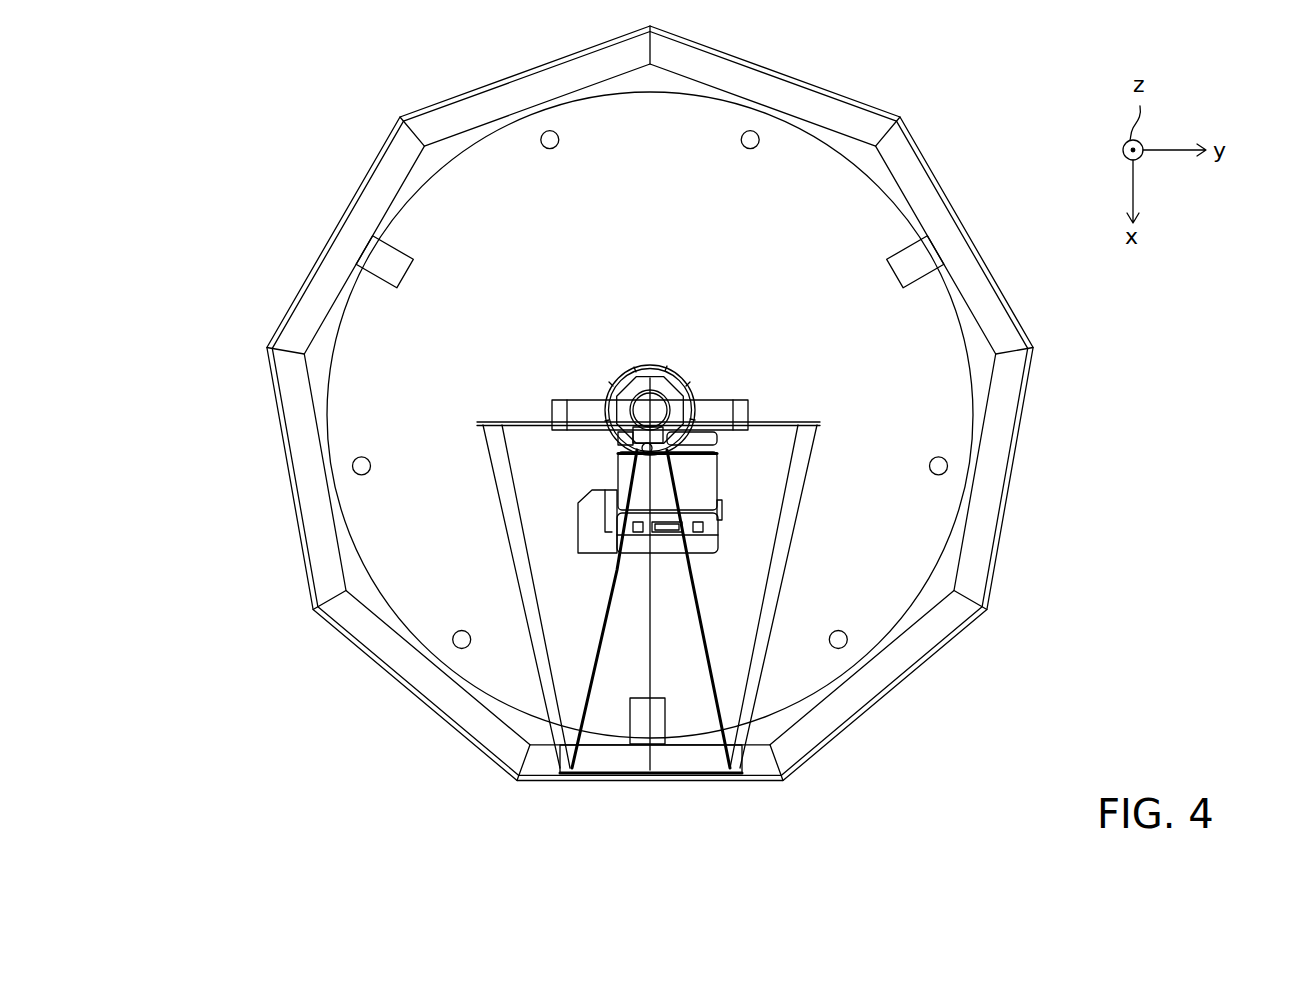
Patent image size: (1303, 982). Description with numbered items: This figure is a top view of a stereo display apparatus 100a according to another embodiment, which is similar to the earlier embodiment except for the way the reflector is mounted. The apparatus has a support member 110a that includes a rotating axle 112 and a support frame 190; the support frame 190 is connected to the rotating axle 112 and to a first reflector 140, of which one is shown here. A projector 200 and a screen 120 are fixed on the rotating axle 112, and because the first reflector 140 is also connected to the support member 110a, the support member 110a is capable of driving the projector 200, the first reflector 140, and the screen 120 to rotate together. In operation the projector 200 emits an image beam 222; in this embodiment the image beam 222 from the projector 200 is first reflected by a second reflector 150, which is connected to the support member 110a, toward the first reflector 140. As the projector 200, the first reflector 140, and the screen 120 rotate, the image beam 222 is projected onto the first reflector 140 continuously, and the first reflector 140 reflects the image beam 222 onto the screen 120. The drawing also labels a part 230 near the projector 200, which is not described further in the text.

The stereo display apparatus 100a is at (997, 811).
The support frame 190 is at (420, 212).
The rotating axle 112 is at (650, 404).
The second reflector 150 is at (642, 425).
The support member 110a is at (738, 405).
The screen 120 is at (820, 423).
The side mount 230 is at (617, 452).
The projector 200 is at (697, 443).
The image beam 222 is at (700, 590).
The first reflector 140 is at (688, 765).